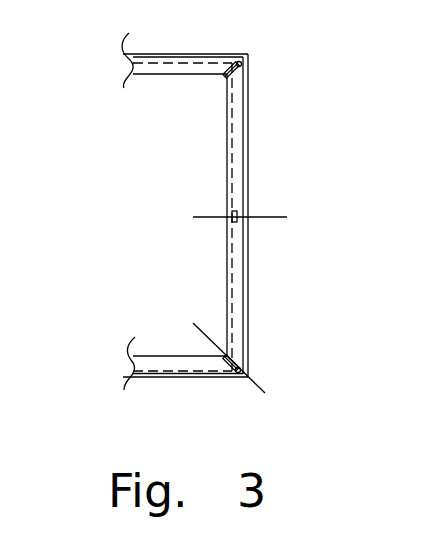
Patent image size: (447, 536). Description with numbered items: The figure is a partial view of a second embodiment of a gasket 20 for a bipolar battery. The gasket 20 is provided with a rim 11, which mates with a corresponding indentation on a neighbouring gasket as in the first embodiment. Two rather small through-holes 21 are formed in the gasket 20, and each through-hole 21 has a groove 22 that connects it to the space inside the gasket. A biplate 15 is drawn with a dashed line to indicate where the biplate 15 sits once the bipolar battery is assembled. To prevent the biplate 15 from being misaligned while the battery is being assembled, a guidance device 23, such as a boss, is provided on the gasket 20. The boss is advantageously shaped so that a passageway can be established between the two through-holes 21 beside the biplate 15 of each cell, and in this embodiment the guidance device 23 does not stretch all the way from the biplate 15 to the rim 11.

The gasket 20 is at (110, 124).
The through-hole 21 is at (243, 64).
The groove 22 is at (243, 82).
The rim 11 is at (246, 118).
The biplate 15 is at (244, 160).
The guidance device 23 is at (237, 220).